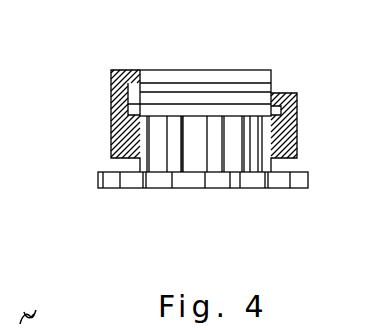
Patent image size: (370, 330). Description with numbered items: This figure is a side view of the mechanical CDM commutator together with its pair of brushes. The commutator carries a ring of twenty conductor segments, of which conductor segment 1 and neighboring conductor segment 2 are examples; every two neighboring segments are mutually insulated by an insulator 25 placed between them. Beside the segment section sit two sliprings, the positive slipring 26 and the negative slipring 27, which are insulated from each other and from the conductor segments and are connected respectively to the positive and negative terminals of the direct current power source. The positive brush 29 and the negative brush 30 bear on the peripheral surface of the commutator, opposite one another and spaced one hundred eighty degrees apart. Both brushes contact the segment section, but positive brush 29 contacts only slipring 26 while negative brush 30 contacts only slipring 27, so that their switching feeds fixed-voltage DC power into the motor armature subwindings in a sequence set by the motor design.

The conductor segment 1 is at (255, 187).
The conductor segment 2 is at (232, 187).
The insulator 25 is at (193, 187).
The positive slipring 26 is at (219, 75).
The negative slipring 27 is at (246, 76).
The positive brush 29 is at (112, 95).
The negative brush 30 is at (297, 130).